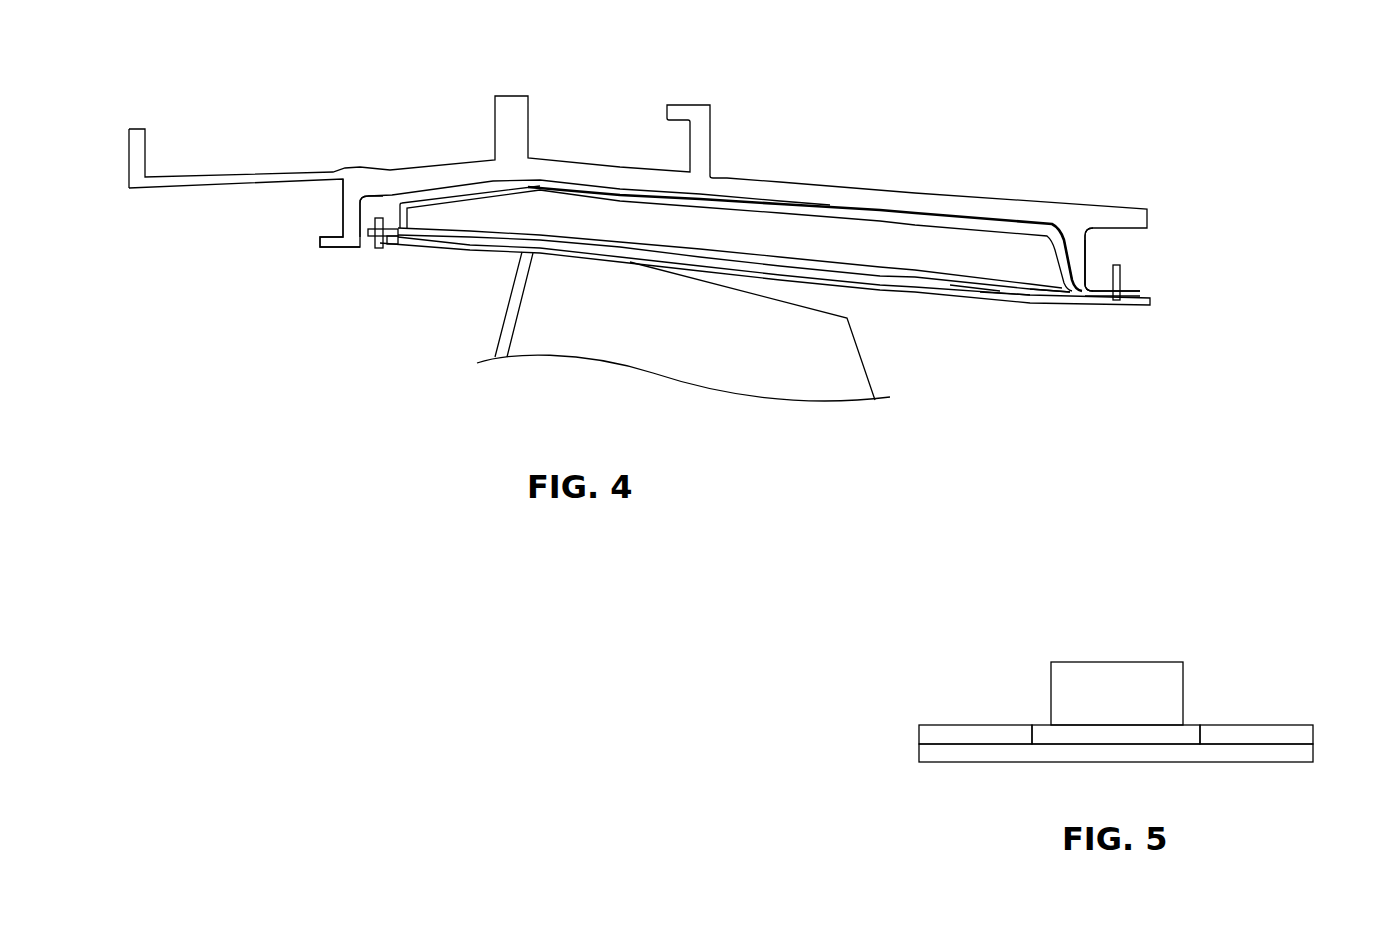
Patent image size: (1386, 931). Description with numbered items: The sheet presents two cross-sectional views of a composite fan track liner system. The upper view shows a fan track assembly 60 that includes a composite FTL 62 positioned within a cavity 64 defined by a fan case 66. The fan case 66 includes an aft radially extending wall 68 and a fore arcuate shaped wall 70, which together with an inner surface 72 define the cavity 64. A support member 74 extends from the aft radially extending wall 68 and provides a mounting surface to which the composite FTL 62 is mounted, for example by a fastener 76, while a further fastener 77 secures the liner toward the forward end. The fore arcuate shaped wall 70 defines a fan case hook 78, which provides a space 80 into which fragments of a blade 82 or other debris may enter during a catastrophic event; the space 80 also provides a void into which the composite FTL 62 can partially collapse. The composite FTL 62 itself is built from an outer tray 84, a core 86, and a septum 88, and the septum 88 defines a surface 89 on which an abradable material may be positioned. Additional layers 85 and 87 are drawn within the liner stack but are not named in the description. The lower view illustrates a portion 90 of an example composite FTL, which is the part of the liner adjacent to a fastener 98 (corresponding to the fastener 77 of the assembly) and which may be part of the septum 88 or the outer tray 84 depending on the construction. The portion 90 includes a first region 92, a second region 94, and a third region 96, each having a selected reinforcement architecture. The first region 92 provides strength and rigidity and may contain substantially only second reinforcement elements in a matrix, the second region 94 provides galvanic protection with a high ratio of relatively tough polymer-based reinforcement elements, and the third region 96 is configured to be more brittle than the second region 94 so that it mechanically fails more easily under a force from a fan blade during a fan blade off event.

In FIG. 4, the fan track assembly 60 is at (246, 72).
In FIG. 4, the composite fan track liner 62 is at (983, 315).
In FIG. 4, the cavity 64 is at (1075, 215).
In FIG. 4, the fan case 66 is at (833, 197).
In FIG. 4, the aft radially extending wall 68 is at (1090, 250).
In FIG. 4, the fore arcuate shaped wall 70 is at (350, 215).
In FIG. 4, the inner surface 72 is at (1050, 222).
In FIG. 4, the support member 74 is at (1097, 295).
In FIG. 4, the fastener 76 is at (1125, 290).
In FIG. 4, the fastener 77 is at (378, 232).
In FIG. 4, the fan case hook 78 is at (392, 265).
In FIG. 4, the space 80 is at (382, 188).
In FIG. 4, the blade 82 is at (830, 380).
In FIG. 4, the outer tray 84 is at (918, 222).
In FIG. 4, the intermediate layer 85 is at (1038, 300).
In FIG. 4, the core 86 is at (752, 222).
In FIG. 4, the lower adhesive layer 87 is at (1013, 300).
In FIG. 4, the septum 88 is at (928, 278).
In FIG. 4, the surface 89 is at (883, 280).
In FIG. 5, the portion 90 is at (1272, 615).
In FIG. 5, the first region 92 is at (930, 756).
In FIG. 5, the second region 94 is at (931, 733).
In FIG. 5, the third region 96 is at (1188, 733).
In FIG. 5, the fastener 98 is at (1058, 688).